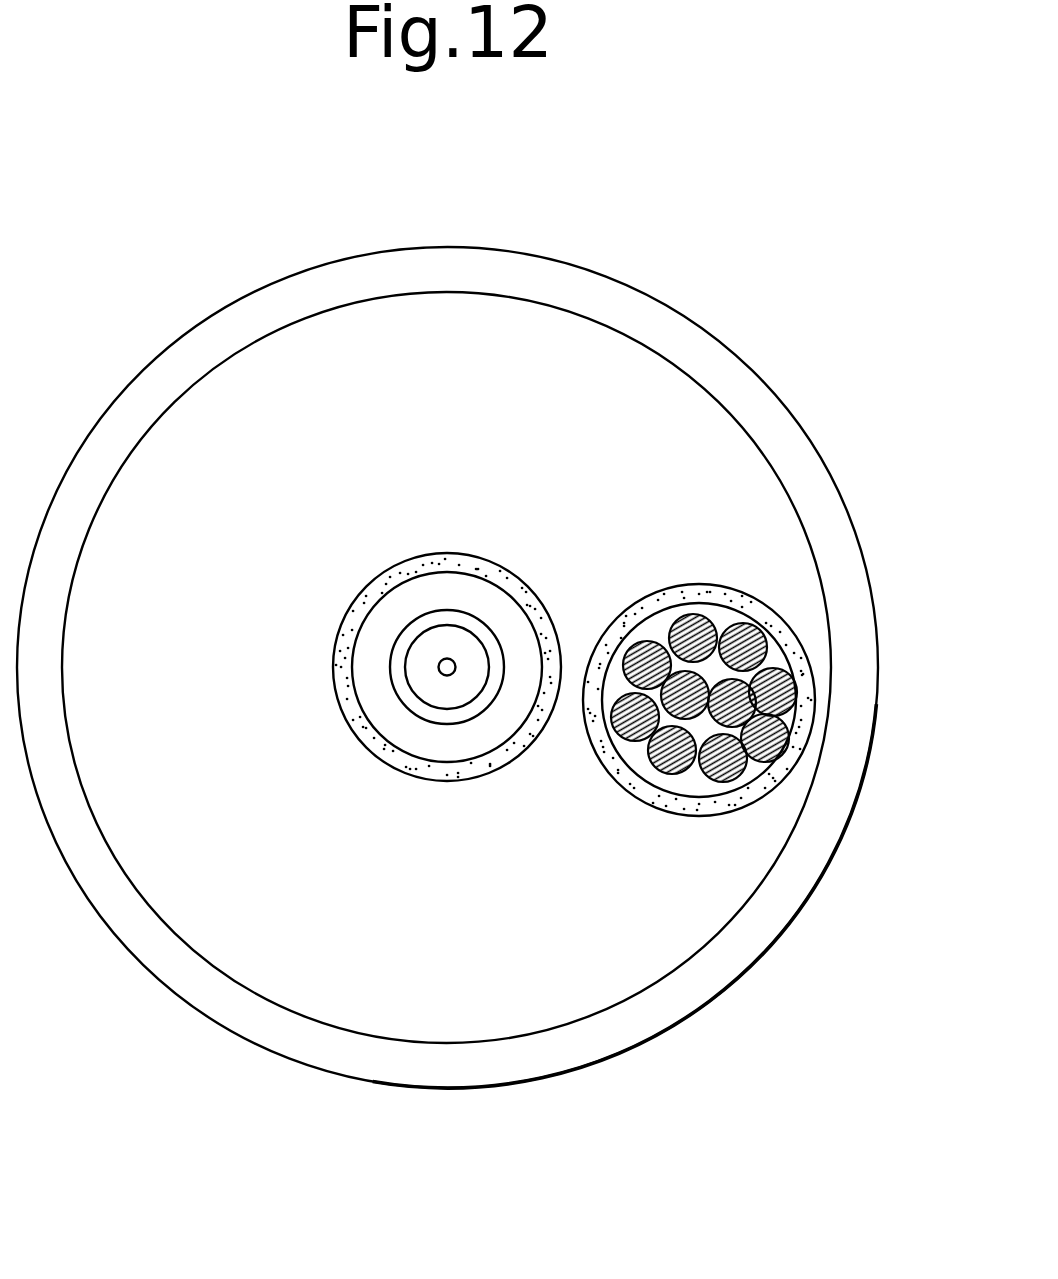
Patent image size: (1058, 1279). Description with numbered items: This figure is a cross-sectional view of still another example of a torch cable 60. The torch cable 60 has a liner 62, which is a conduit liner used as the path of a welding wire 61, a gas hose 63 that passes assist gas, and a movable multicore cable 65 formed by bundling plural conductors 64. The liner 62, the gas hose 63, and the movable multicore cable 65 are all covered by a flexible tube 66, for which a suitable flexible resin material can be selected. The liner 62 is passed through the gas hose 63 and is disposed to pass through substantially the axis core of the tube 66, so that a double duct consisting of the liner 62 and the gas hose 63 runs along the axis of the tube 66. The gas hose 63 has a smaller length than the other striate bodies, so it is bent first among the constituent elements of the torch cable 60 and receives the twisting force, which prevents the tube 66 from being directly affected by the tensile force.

The torch cable 60 is at (680, 248).
The welding wire 61 is at (446, 657).
The liner 62 is at (397, 654).
The gas hose 63 is at (380, 758).
The conductors 64 is at (675, 760).
The movable multicore cable 65 is at (685, 582).
The flexible tube 66 is at (487, 1063).